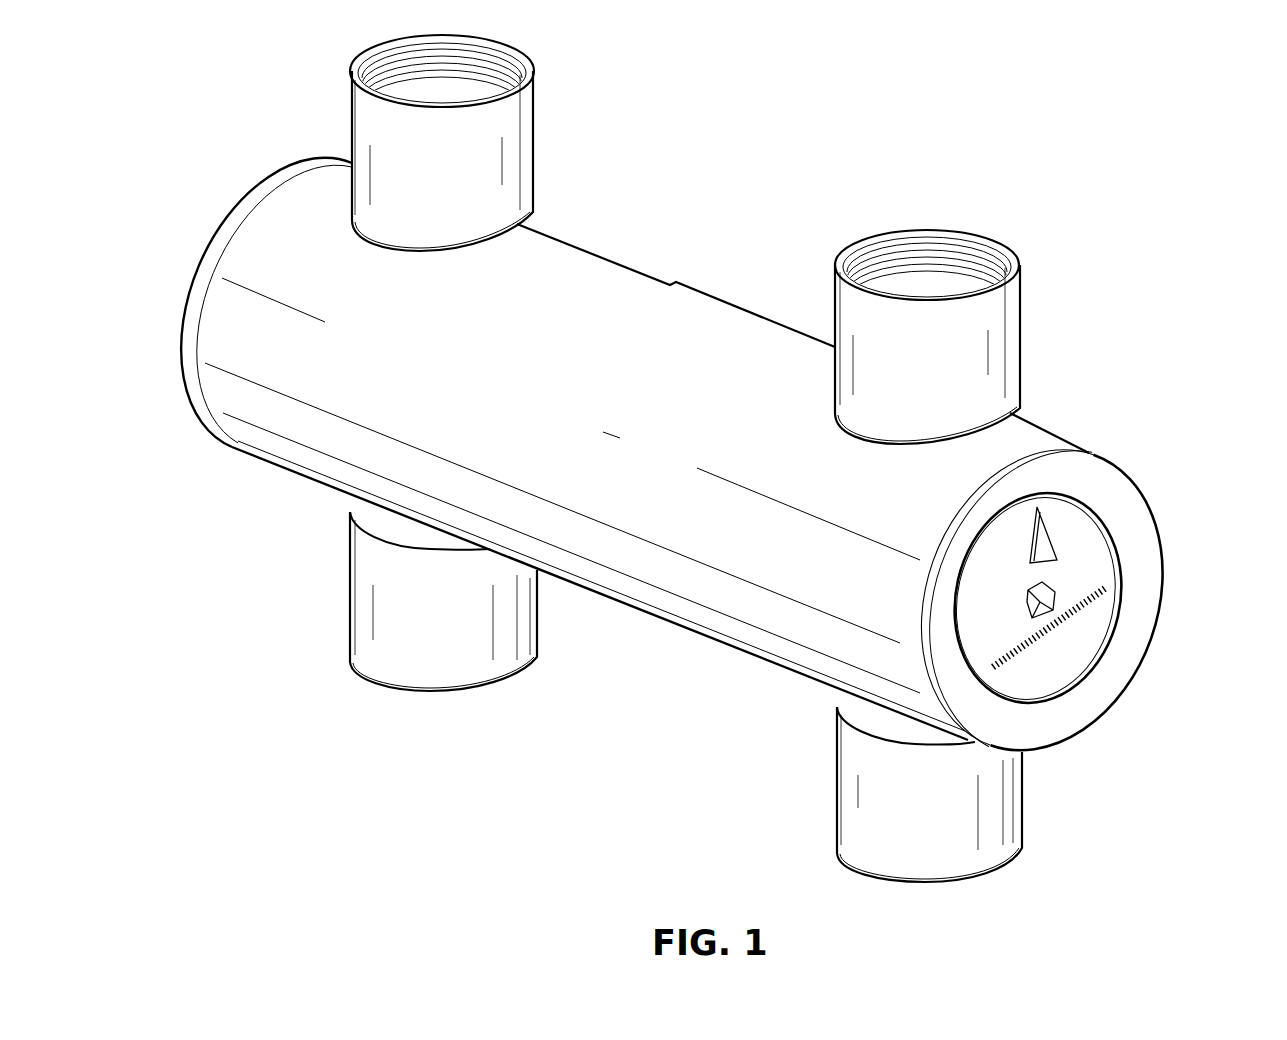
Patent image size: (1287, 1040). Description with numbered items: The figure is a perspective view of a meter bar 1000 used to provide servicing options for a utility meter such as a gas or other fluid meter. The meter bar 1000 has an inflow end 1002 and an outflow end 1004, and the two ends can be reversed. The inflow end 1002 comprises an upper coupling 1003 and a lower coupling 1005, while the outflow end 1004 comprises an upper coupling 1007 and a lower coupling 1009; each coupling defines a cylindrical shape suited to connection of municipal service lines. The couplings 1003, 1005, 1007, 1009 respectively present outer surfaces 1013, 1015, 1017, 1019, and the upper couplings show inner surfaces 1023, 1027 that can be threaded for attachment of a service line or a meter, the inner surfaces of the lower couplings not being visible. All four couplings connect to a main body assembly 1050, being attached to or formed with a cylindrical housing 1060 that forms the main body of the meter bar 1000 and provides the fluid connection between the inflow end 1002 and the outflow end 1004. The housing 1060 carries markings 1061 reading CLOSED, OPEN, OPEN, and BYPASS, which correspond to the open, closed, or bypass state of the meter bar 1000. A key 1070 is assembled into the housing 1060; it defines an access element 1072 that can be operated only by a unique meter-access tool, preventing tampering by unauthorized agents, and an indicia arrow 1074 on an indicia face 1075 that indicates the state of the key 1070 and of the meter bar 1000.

The meter bar 1000 is at (1152, 298).
The inflow end 1002 is at (598, 172).
The upper coupling 1003 is at (533, 72).
The outflow end 1004 is at (1202, 373).
The lower coupling 1005 is at (475, 691).
The upper coupling 1007 is at (1008, 283).
The lower coupling 1009 is at (853, 868).
The outer surface 1013 is at (472, 184).
The outer surface 1015 is at (472, 625).
The outer surface 1017 is at (969, 358).
The outer surface 1019 is at (950, 817).
The inner surface 1023 is at (413, 73).
The inner surface 1027 is at (922, 255).
The main body assembly 1050 is at (715, 662).
The housing 1060 is at (623, 297).
The markings 1061 is at (1098, 457).
The key 1070 is at (1090, 642).
The access element 1072 is at (1050, 585).
The indicia arrow 1074 is at (1038, 540).
The indicia face 1075 is at (1090, 600).